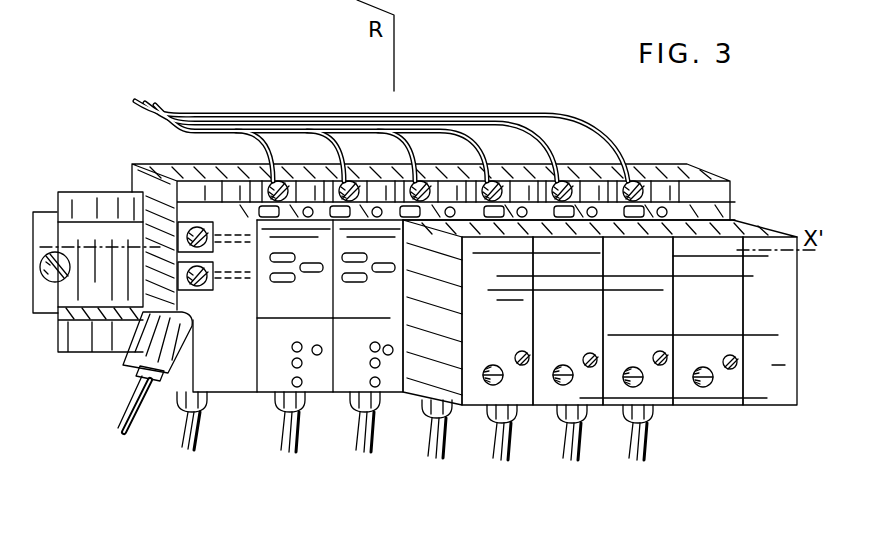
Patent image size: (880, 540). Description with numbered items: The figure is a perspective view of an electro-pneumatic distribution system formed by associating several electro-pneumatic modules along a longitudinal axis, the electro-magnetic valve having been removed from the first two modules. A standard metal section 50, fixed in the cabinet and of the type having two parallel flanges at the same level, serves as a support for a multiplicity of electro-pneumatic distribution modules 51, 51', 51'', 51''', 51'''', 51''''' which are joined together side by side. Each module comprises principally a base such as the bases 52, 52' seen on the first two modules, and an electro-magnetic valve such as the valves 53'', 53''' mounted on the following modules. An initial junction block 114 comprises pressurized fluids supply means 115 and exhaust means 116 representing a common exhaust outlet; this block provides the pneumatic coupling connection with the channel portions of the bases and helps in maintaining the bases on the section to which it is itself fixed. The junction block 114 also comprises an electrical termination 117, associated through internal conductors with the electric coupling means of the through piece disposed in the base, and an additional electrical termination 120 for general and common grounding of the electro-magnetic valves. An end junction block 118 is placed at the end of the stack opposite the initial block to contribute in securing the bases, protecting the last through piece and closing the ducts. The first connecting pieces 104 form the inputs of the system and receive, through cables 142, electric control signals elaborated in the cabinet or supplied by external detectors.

The first connecting piece 104 is at (289, 188).
The cable 142 is at (264, 158).
The additional electrical termination 120 is at (182, 228).
The standard metal section 50 is at (103, 306).
The electrical termination 117 is at (258, 320).
The pressurized fluids supply means 115 is at (123, 352).
The exhaust means 116 is at (184, 420).
The initial junction block 114 is at (240, 453).
The base 52 is at (268, 411).
The base 52' is at (347, 412).
The electro-magnetic valve 53'' is at (425, 331).
The electro-magnetic valve 53''' is at (557, 425).
The electro-pneumatic distribution module 51 is at (295, 362).
The electro-pneumatic distribution module 51' is at (368, 362).
The electro-pneumatic distribution module 51'' is at (470, 371).
The electro-pneumatic distribution module 51''' is at (568, 371).
The electro-pneumatic distribution module 51'''' is at (638, 371).
The electro-pneumatic distribution module 51''''' is at (708, 371).
The end junction block 118 is at (800, 453).